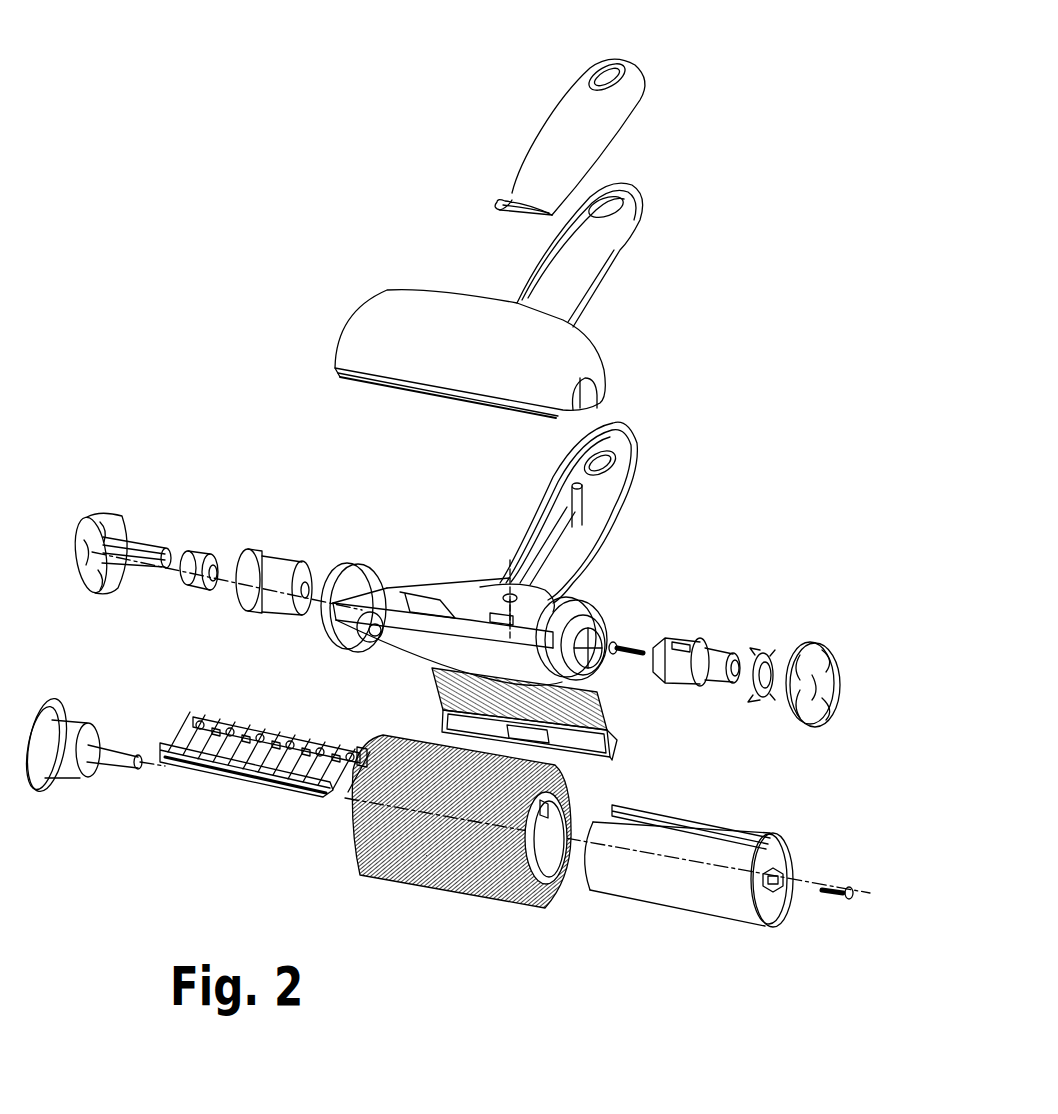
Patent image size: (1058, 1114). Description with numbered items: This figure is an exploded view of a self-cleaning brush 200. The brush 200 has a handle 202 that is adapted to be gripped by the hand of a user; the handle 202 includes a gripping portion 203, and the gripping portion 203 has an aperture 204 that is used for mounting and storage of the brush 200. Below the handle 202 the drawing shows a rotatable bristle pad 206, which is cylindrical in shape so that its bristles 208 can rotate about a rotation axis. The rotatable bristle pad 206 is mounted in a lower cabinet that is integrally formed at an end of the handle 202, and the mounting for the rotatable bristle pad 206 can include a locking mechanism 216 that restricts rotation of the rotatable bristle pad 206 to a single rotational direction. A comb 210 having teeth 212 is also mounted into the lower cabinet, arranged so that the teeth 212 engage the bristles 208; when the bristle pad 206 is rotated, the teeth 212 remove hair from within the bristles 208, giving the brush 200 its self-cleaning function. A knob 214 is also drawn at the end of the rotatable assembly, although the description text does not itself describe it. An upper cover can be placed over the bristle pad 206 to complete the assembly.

The brush 200 is at (255, 222).
The handle 202 is at (622, 570).
The gripping portion 203 is at (550, 260).
The aperture 204 is at (607, 76).
The rotatable bristle pad 206 is at (855, 833).
The bristles 208 is at (532, 905).
The comb 210 is at (612, 742).
The teeth 212 is at (607, 713).
The knob 214 is at (812, 712).
The locking mechanism 216 is at (605, 603).